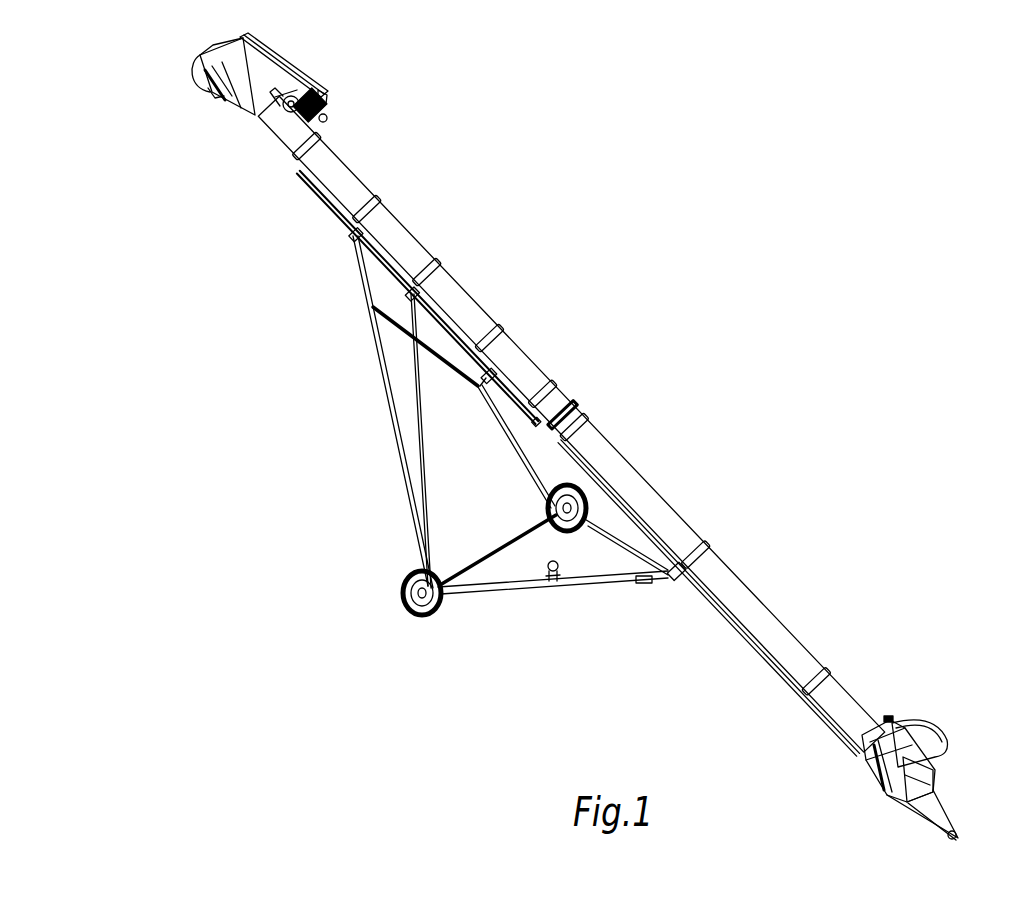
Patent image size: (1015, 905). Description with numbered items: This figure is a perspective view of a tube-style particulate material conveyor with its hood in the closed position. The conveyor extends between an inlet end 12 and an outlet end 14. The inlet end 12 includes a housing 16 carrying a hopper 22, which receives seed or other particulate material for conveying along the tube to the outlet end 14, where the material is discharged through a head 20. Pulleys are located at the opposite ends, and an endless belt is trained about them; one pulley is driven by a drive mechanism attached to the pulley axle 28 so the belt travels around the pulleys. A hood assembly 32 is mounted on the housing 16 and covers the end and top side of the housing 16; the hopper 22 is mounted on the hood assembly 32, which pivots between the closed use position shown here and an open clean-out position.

The outlet end 14 is at (220, 91).
The head 20 is at (200, 72).
The pulley axle 28 is at (290, 121).
The inlet end 12 is at (899, 758).
The hopper 22 is at (928, 733).
The hood assembly 32 is at (937, 767).
The housing 16 is at (870, 770).